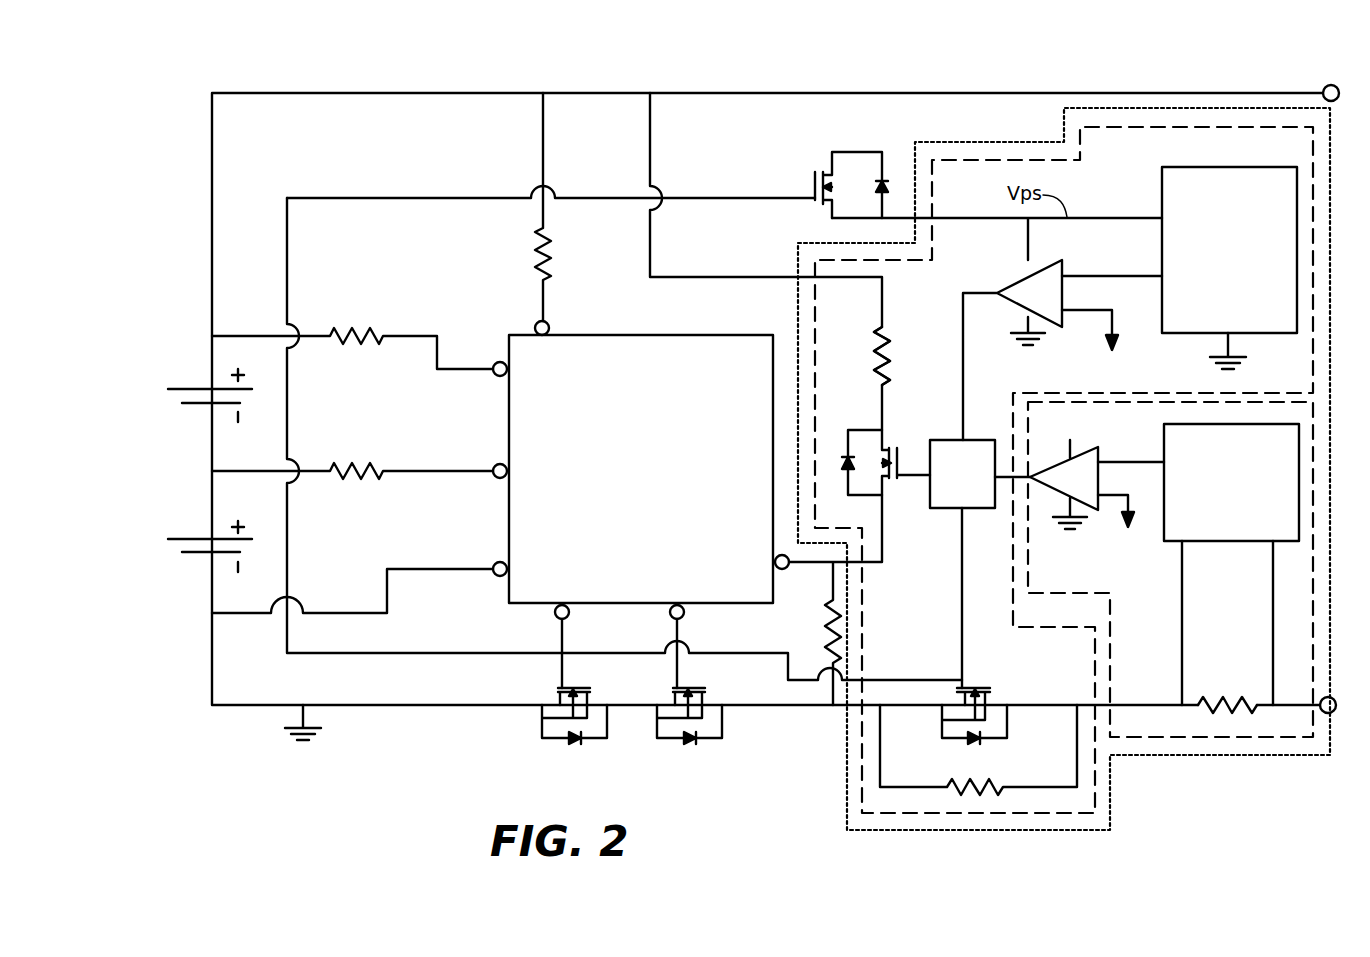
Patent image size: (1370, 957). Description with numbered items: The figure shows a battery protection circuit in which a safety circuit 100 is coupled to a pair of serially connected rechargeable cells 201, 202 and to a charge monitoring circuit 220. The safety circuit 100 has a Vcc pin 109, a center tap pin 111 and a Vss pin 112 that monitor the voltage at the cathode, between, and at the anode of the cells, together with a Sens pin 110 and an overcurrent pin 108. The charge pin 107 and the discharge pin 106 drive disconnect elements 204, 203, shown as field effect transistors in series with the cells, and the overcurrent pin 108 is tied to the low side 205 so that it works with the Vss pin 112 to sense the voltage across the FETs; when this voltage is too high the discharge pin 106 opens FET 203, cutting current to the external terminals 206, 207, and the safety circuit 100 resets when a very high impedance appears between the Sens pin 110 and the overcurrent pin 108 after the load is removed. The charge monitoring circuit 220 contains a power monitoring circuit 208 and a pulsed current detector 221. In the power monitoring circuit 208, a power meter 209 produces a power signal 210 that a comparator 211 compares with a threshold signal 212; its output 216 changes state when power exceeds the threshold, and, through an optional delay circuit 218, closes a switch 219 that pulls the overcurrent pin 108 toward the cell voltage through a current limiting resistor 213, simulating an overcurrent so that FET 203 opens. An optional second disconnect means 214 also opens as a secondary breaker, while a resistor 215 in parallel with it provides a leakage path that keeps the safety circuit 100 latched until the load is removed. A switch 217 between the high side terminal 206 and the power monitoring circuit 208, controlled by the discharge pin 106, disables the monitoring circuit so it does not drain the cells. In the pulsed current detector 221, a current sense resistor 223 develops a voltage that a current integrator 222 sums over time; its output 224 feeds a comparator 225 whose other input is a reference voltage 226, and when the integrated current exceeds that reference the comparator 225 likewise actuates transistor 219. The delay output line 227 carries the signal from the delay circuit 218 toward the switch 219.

The safety circuit 100 is at (680, 335).
The discharge pin 106 is at (565, 621).
The charge pin 107 is at (680, 621).
The overcurrent pin 108 is at (752, 546).
The Vcc pin 109 is at (499, 380).
The Sens pin 110 is at (547, 322).
The center tap pin 111 is at (499, 482).
The Vss pin 112 is at (503, 577).
The rechargeable cell 201 is at (207, 386).
The rechargeable cell 202 is at (200, 537).
The discharge disconnect element 203 is at (572, 688).
The charge disconnect element 204 is at (687, 688).
The low side 205 is at (812, 707).
The high side external terminal 206 is at (1323, 87).
The external terminal 207 is at (1337, 712).
The power monitoring circuit 208 is at (985, 158).
The power meter 209 is at (1205, 167).
The power signal 210 is at (1133, 275).
The comparator 211 is at (1022, 293).
The predetermined threshold signal 212 is at (1115, 337).
The current limiting resistor 213 is at (890, 372).
The second disconnect means 214 is at (975, 688).
The resistor 215 is at (968, 786).
The comparator output 216 is at (965, 600).
The switch 217 is at (815, 180).
The optional delay circuit 218 is at (980, 452).
The switch 219 is at (883, 448).
The charge monitoring circuit 220 is at (1120, 758).
The pulsed current detector 221 is at (1228, 740).
The current integrator 222 is at (1258, 543).
The current sense resistor 223 is at (1200, 702).
The current integrator output 224 is at (1122, 462).
The comparator 225 is at (1087, 487).
The reference voltage 226 is at (1133, 512).
The delay output line 227 is at (1003, 480).